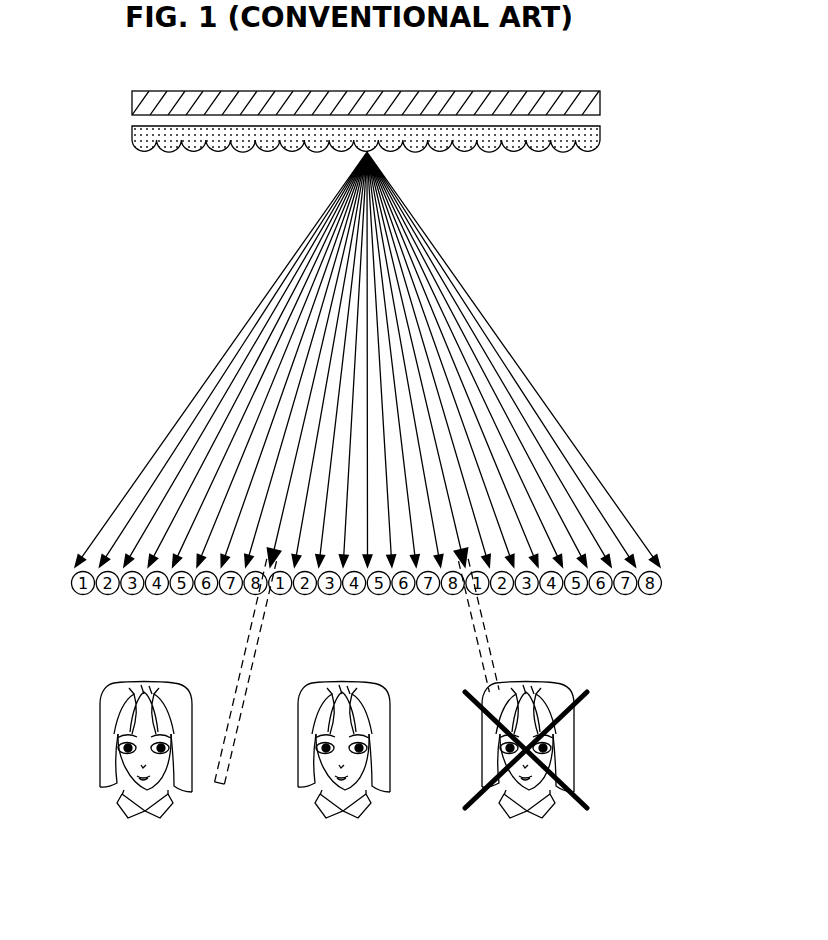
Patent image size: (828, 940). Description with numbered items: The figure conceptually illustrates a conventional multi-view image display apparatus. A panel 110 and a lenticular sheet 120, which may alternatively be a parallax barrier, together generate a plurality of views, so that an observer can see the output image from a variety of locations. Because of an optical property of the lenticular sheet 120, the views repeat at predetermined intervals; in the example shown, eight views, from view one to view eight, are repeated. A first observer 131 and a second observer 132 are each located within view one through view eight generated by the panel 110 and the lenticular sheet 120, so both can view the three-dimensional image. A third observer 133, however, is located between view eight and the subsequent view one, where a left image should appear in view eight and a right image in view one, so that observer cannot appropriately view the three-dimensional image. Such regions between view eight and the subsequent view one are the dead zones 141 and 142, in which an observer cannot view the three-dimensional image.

The panel 110 is at (602, 100).
The lenticular sheet 120 is at (602, 138).
The observer (1) 131 is at (100, 746).
The observer (2) 132 is at (359, 816).
The observer (3) 133 is at (574, 736).
The dead zone 141 is at (168, 613).
The dead zone 142 is at (567, 613).